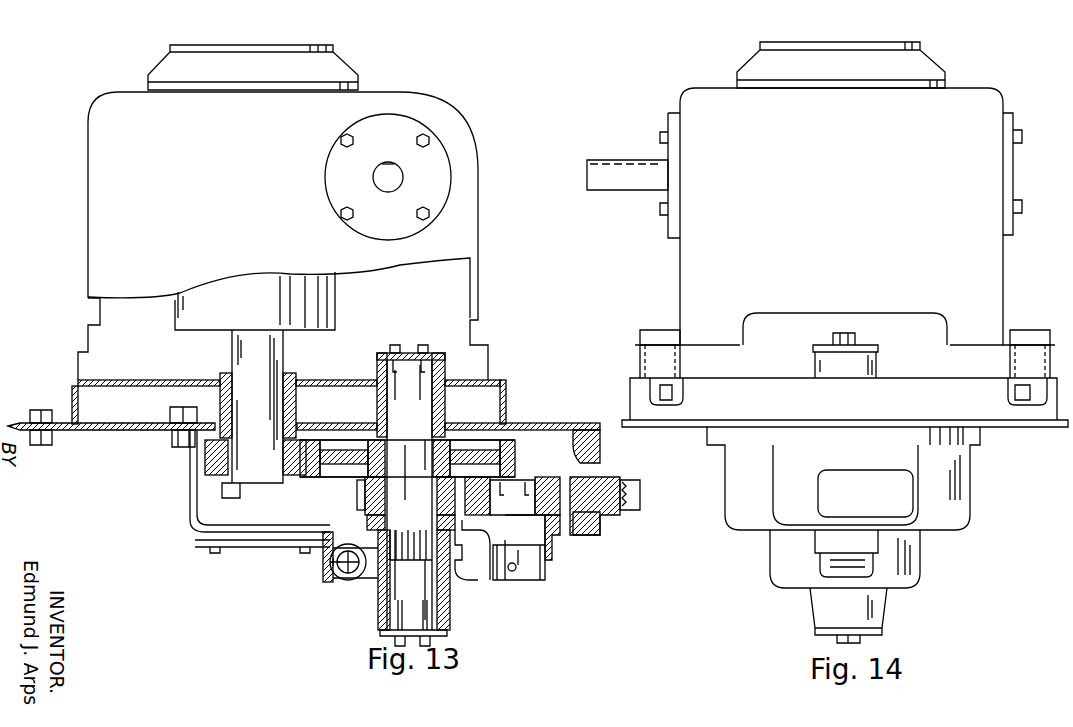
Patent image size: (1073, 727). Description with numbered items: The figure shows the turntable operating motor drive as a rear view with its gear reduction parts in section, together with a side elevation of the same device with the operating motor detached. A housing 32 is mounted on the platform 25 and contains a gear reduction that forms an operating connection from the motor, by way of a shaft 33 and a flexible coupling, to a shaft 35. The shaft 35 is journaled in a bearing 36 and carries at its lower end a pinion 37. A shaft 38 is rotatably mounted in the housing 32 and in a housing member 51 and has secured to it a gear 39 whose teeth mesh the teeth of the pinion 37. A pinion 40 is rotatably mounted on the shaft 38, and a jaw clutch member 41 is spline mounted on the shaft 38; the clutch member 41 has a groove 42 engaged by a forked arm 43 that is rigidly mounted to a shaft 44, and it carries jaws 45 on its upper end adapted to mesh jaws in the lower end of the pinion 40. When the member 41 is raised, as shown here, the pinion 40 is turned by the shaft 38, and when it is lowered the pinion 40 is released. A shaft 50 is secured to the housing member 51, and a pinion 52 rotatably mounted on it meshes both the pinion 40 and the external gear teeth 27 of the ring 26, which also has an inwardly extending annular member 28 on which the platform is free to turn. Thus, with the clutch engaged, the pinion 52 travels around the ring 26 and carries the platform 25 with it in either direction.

In FIG. 13, the platform 25 is at (100, 432).
In FIG. 14, the platform 25 is at (883, 418).
In FIG. 13, the ring 26 is at (583, 537).
In FIG. 13, the external gear teeth 27 is at (595, 506).
In FIG. 13, the inwardly extending annular member 28 is at (640, 495).
In FIG. 13, the housing 32 is at (283, 212).
In FIG. 14, the housing 32 is at (845, 193).
In FIG. 13, the shaft 33 is at (372, 172).
In FIG. 14, the shaft 33 is at (640, 193).
In FIG. 13, the shaft 35 is at (288, 350).
In FIG. 13, the bearing 36 is at (296, 400).
In FIG. 13, the pinion 37 is at (295, 480).
In FIG. 13, the shaft 38 is at (411, 487).
In FIG. 13, the gear 39 is at (345, 465).
In FIG. 13, the pinion 40 is at (368, 493).
In FIG. 13, the jaw clutch member 41 is at (452, 595).
In FIG. 13, the groove 42 is at (478, 572).
In FIG. 13, the arm 43 is at (357, 588).
In FIG. 13, the shaft 44 is at (328, 570).
In FIG. 13, the jaws 45 is at (395, 537).
In FIG. 13, the shaft 50 is at (519, 547).
In FIG. 13, the housing member 51 is at (190, 508).
In FIG. 14, the housing member 51 is at (970, 492).
In FIG. 13, the pinion 52 is at (548, 540).